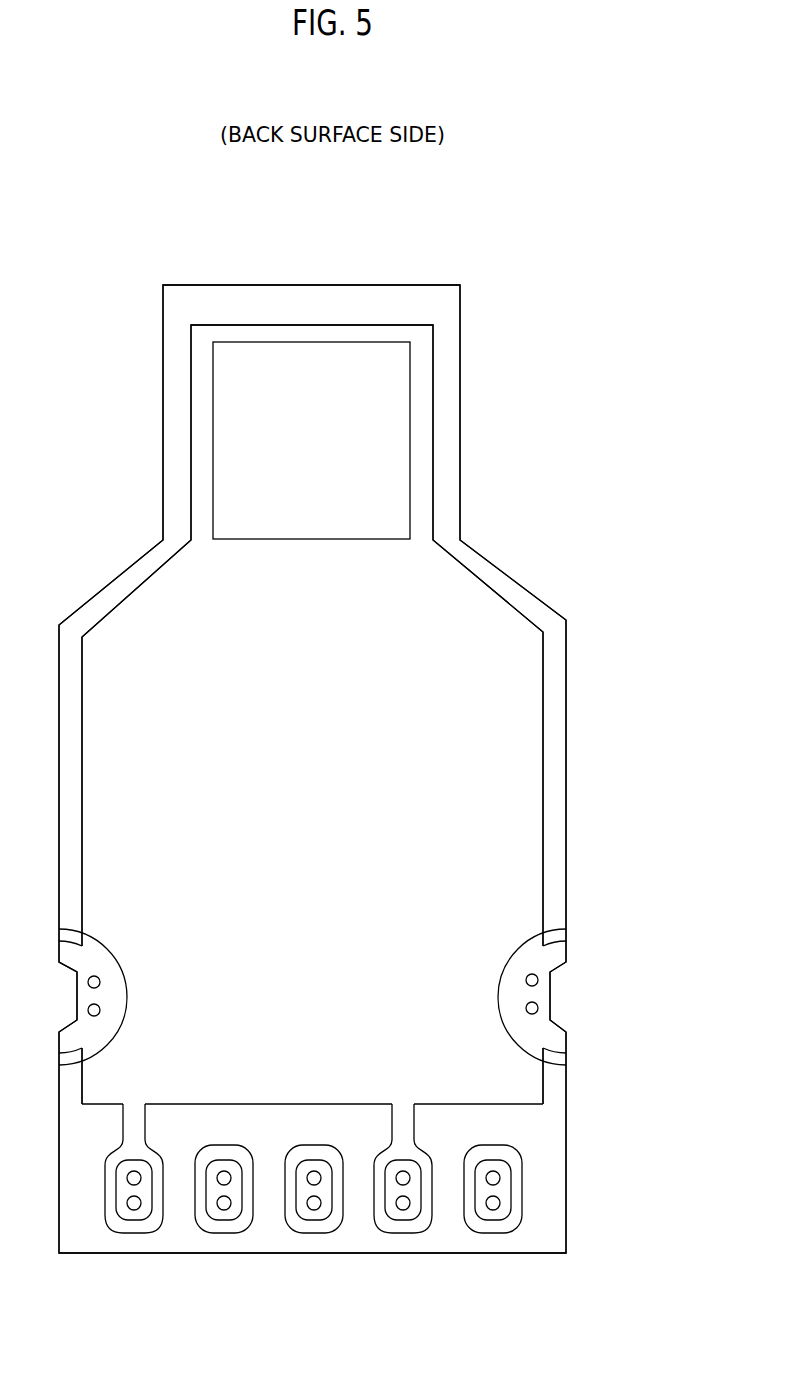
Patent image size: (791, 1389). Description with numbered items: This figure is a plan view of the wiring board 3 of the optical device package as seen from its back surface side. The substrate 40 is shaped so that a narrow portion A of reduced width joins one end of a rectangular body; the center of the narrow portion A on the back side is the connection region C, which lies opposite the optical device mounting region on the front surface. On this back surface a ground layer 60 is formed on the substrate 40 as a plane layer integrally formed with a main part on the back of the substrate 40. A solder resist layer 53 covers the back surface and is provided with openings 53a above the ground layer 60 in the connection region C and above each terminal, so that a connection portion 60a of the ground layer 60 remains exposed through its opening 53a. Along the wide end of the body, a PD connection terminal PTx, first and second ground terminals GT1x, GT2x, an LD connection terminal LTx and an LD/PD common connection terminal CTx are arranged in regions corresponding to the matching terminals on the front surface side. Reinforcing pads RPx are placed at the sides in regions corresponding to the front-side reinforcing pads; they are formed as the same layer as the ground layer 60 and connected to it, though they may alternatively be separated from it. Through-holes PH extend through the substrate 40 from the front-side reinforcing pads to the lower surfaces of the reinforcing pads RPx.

The wiring board 3 is at (538, 212).
The substrate 40 is at (567, 737).
The solder resist layer 53 is at (532, 815).
The openings 53a is at (362, 342).
The ground layer 60 is at (510, 600).
The connection portion 60a is at (294, 373).
The reinforcing pads RPx is at (556, 953).
The through-holes PH is at (539, 980).
The second ground terminal GT2x is at (135, 1234).
The LD/PD common connection terminal CTx is at (217, 1234).
The LD connection terminal LTx is at (312, 1234).
The first ground terminal GT1x is at (402, 1234).
The PD connection terminal PTx is at (494, 1234).
The narrow portion A is at (508, 284).
The connection region C is at (410, 212).